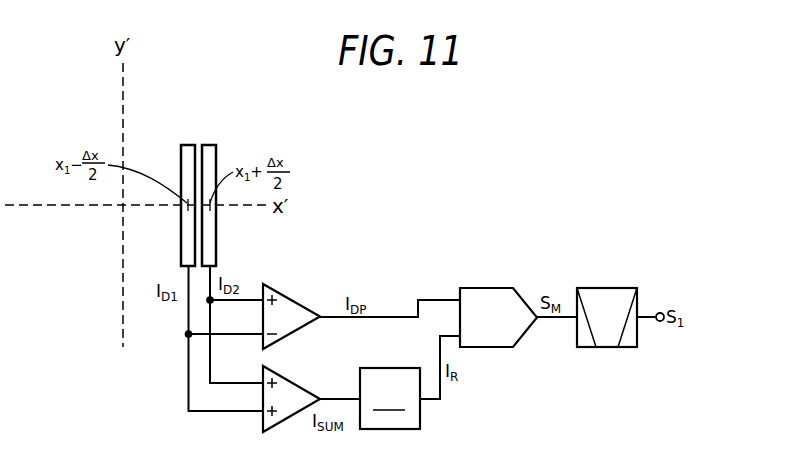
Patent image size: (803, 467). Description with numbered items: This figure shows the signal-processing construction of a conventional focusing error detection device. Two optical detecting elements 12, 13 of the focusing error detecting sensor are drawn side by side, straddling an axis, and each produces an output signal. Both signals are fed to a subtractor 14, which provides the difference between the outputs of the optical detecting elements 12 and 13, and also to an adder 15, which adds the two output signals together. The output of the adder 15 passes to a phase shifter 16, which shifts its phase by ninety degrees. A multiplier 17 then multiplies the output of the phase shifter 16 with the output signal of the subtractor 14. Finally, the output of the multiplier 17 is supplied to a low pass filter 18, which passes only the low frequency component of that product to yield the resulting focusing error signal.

The optical detecting element 12 is at (188, 145).
The optical detecting element 13 is at (210, 145).
The subtractor 14 is at (298, 300).
The adder 15 is at (298, 384).
The phase shifter 16 is at (393, 368).
The multiplier 17 is at (493, 288).
The low pass filter 18 is at (613, 288).